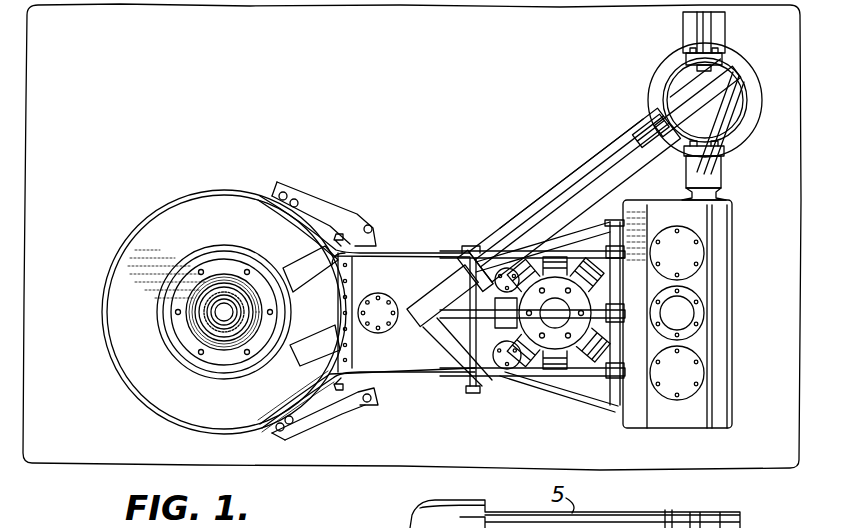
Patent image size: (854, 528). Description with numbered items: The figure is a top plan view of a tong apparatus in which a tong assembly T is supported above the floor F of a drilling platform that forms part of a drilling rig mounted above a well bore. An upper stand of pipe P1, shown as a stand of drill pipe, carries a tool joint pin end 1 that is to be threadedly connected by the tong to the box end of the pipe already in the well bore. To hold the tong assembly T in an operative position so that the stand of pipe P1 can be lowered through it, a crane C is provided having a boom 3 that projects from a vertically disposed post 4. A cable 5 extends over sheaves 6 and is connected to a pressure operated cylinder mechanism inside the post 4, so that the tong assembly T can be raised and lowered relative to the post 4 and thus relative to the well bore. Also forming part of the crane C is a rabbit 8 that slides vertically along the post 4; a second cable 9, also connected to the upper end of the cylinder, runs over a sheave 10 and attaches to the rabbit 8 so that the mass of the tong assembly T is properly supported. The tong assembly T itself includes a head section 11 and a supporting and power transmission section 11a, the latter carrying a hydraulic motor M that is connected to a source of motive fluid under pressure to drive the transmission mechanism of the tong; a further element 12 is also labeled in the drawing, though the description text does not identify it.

The floor F is at (62, 467).
The head section 11 is at (215, 186).
The tool joint pin end 1 is at (226, 302).
The upper stand of pipe P1 is at (226, 322).
The tong assembly T is at (413, 245).
The supporting and power transmission section 11a is at (452, 385).
The boom 3 is at (528, 221).
The cable 5 is at (578, 198).
The crane C is at (620, 130).
The rabbit 8 is at (648, 73).
The sheaves 6 is at (690, 100).
The post 4 is at (742, 107).
The second cable 9 is at (724, 115).
The sheave 10 is at (716, 160).
The hydraulic motor M is at (565, 368).
The housing 12 is at (606, 415).